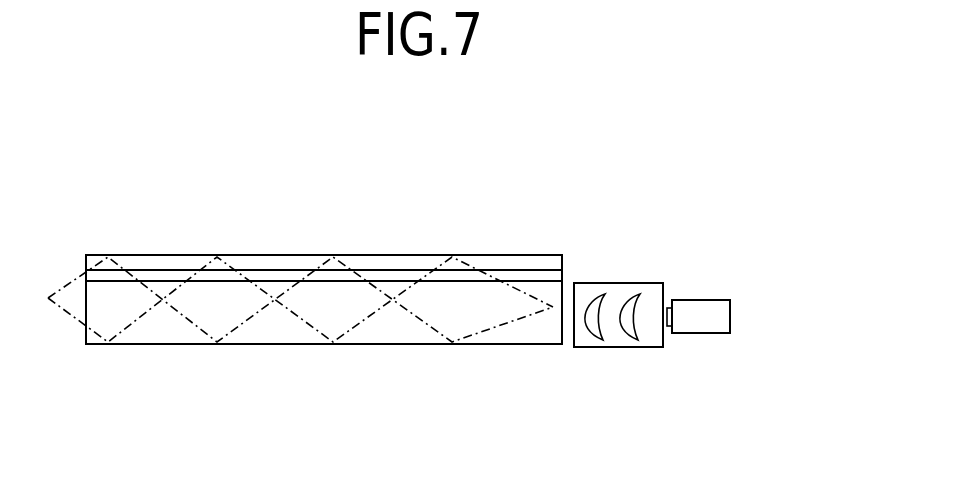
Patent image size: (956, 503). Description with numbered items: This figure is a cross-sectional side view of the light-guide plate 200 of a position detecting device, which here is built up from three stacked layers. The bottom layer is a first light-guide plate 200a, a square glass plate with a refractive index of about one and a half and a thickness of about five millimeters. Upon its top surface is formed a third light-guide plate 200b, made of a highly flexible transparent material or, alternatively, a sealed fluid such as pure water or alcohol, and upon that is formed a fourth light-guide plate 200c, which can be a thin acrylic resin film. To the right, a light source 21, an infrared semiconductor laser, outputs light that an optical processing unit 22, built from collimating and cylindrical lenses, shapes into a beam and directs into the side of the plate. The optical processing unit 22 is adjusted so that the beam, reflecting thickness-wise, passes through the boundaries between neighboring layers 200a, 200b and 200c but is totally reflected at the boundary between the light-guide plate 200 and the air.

The light-guide plate 200 is at (352, 344).
The first light-guide plate 200a is at (203, 330).
The third light-guide plate 200b is at (163, 277).
The fourth light-guide plate 200c is at (292, 267).
The optical processing unit 22 is at (600, 283).
The light source 21 is at (692, 297).